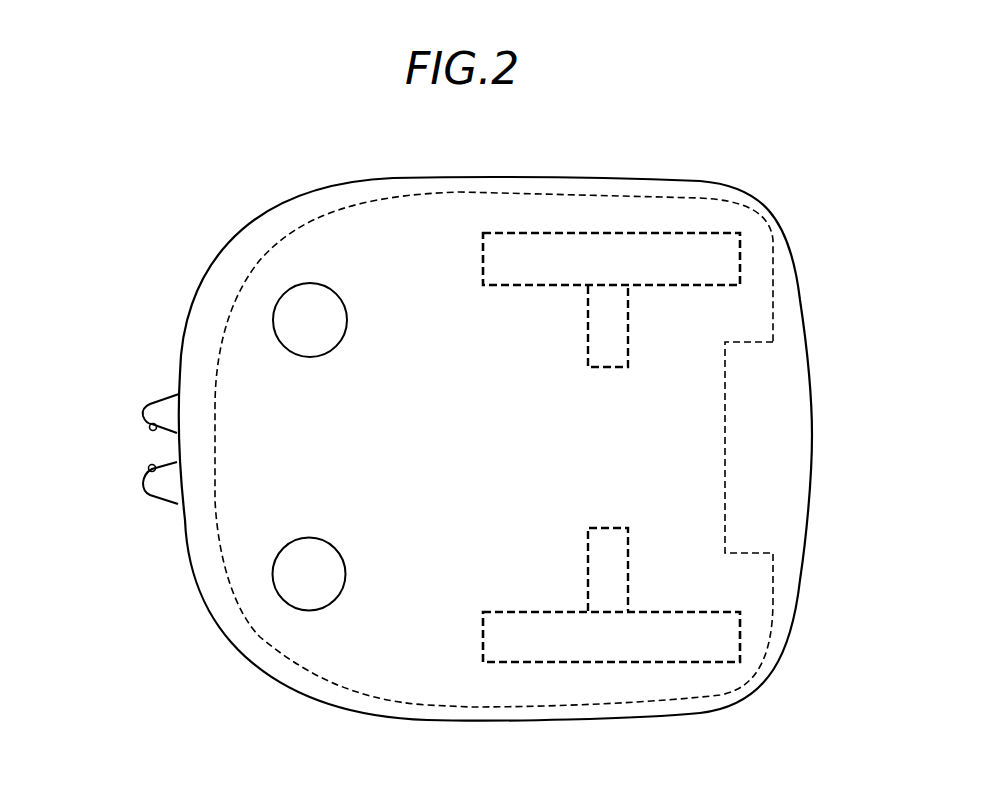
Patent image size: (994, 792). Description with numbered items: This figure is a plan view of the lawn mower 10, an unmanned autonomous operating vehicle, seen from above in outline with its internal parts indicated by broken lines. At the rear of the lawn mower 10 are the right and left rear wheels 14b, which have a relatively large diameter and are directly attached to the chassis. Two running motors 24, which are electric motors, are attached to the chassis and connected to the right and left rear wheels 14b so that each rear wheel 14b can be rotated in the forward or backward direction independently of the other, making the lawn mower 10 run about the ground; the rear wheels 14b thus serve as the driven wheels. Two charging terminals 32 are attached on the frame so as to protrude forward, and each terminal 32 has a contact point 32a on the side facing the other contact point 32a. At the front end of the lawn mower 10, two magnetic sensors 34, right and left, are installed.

The lawn mower 10 is at (738, 176).
The rear wheels 14b is at (527, 286).
The running motors 24 is at (608, 368).
The charging terminals 32 is at (142, 410).
The contact point 32a is at (148, 430).
The magnetic sensors 34 is at (312, 357).